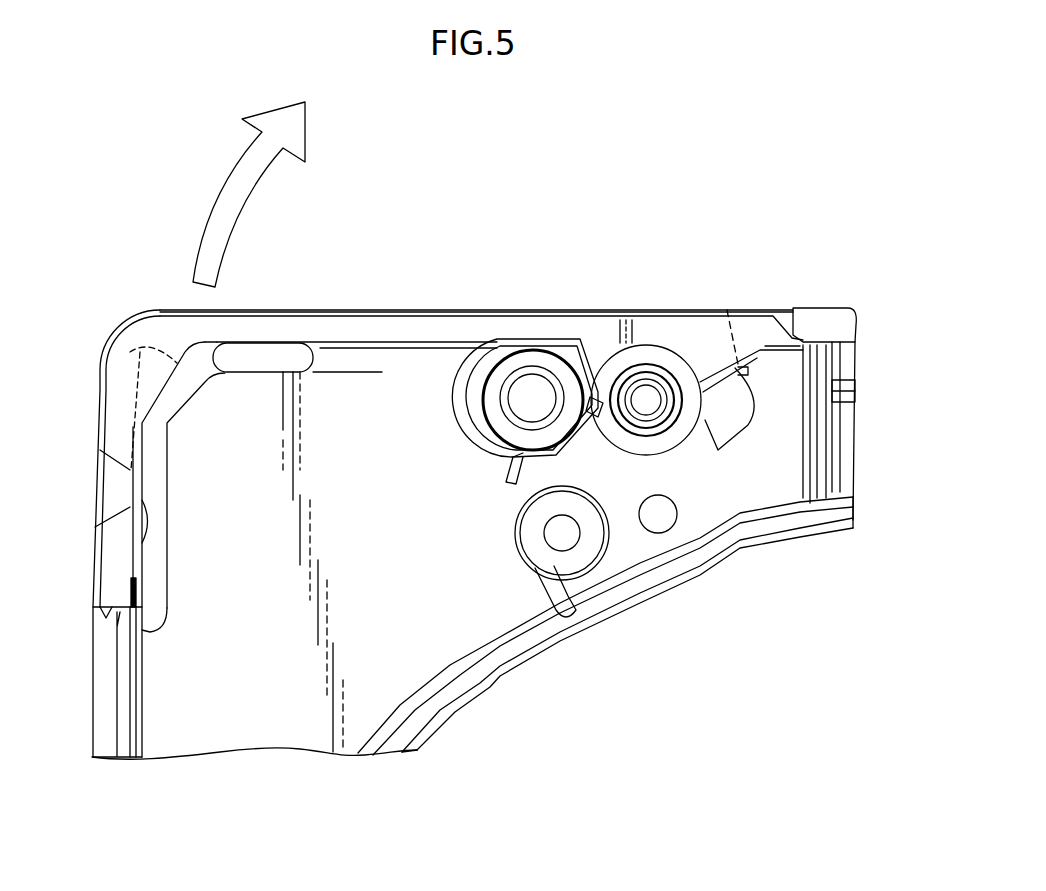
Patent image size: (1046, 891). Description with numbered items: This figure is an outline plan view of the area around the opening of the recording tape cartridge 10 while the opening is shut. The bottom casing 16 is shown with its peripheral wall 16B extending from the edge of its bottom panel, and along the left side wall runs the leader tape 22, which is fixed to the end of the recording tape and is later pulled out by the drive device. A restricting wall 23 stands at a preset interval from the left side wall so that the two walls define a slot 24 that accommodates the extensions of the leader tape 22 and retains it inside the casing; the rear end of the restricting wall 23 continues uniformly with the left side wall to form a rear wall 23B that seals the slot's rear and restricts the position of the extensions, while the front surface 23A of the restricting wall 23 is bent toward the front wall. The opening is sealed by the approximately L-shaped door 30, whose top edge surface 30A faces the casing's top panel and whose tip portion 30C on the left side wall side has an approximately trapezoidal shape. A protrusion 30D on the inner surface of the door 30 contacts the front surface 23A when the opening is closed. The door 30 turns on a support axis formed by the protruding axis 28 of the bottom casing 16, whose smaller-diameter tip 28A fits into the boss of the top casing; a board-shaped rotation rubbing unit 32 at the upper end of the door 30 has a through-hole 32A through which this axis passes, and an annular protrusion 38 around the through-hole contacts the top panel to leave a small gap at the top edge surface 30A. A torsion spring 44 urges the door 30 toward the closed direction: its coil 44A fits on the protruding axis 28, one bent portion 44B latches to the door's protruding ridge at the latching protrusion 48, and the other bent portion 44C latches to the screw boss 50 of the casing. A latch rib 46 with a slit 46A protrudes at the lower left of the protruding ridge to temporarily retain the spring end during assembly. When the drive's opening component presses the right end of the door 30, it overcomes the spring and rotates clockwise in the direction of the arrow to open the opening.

The recording tape cartridge 10 is at (708, 128).
The bottom casing 16 is at (822, 305).
The peripheral wall 16B is at (380, 310).
The leader tape 22 is at (143, 704).
The restricting wall 23 is at (158, 500).
The front surface 23A is at (283, 343).
The rear wall 23B is at (142, 632).
The slot 24 is at (150, 527).
The protruding axis 28 is at (652, 400).
The tip 28A is at (712, 402).
The door 30 is at (165, 314).
The top edge surface 30A is at (455, 332).
The tip portion 30C is at (101, 607).
The protrusion 30D is at (232, 346).
The rotation rubbing unit 32 is at (627, 455).
The through-hole 32A is at (664, 428).
The annular protrusion 38 is at (660, 436).
The torsion spring 44 is at (513, 486).
The coil 44A is at (672, 422).
The bent portion 44B is at (727, 310).
The bent portion 44C is at (522, 455).
The latch rib 46 is at (553, 340).
The slit 46A is at (593, 414).
The latching protrusion 48 is at (730, 430).
The screw boss 50 is at (488, 398).